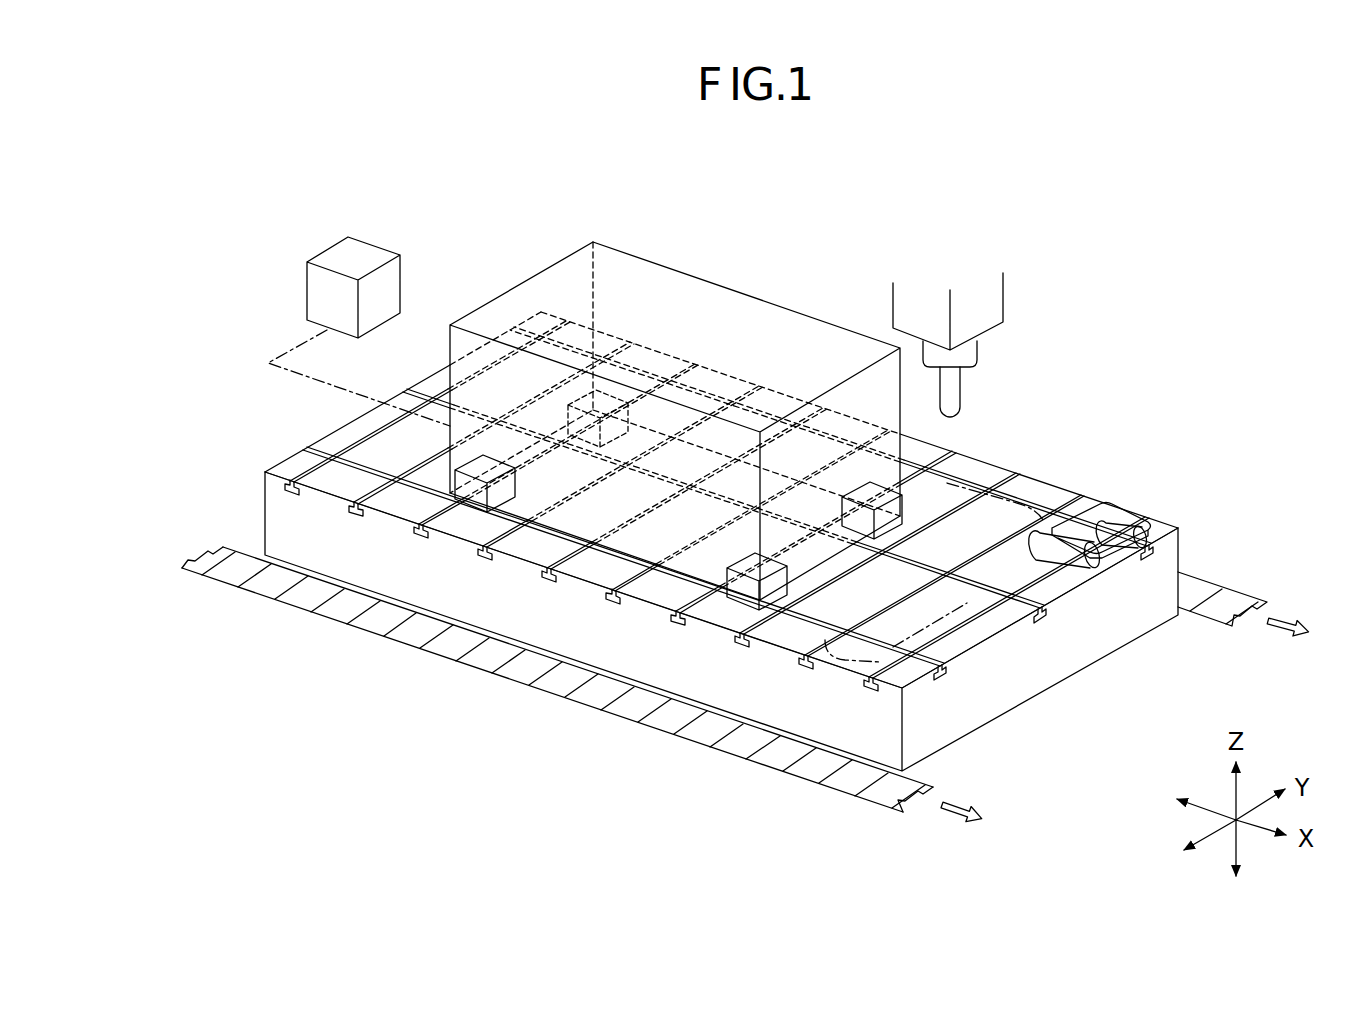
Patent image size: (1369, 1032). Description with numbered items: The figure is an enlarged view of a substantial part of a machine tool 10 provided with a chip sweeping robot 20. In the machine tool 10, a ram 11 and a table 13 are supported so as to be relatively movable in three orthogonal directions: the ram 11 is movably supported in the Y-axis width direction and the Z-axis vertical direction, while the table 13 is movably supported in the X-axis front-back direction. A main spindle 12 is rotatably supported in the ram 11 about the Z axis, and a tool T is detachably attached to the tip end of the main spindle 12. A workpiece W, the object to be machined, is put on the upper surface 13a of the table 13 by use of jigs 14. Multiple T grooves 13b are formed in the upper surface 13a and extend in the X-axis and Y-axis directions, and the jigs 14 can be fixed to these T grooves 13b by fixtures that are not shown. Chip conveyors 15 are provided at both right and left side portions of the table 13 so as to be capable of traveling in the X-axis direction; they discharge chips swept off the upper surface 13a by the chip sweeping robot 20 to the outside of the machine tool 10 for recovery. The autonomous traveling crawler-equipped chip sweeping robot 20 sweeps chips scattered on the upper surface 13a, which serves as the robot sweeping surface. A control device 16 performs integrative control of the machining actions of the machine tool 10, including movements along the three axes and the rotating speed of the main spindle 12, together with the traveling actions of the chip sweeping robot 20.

The machine tool 10 is at (798, 202).
The ram 11 is at (1005, 284).
The main spindle 12 is at (979, 344).
The tool T is at (962, 391).
The workpiece W is at (658, 263).
The table 13 is at (1104, 665).
The upper surface 13a is at (972, 633).
The T grooves 13b is at (940, 676).
The jigs 14 is at (473, 494).
The chip conveyors 15 is at (290, 604).
The control device 16 is at (327, 248).
The chip sweeping robot 20 is at (1097, 518).